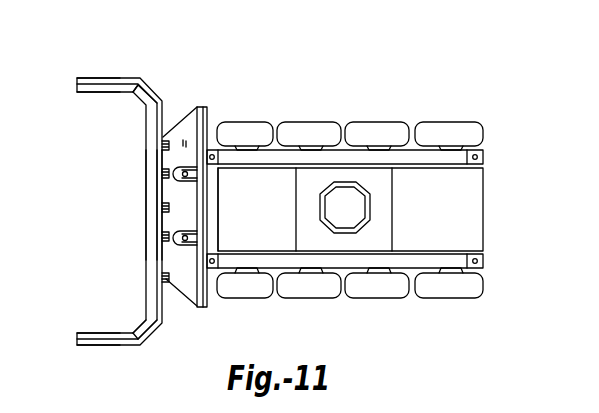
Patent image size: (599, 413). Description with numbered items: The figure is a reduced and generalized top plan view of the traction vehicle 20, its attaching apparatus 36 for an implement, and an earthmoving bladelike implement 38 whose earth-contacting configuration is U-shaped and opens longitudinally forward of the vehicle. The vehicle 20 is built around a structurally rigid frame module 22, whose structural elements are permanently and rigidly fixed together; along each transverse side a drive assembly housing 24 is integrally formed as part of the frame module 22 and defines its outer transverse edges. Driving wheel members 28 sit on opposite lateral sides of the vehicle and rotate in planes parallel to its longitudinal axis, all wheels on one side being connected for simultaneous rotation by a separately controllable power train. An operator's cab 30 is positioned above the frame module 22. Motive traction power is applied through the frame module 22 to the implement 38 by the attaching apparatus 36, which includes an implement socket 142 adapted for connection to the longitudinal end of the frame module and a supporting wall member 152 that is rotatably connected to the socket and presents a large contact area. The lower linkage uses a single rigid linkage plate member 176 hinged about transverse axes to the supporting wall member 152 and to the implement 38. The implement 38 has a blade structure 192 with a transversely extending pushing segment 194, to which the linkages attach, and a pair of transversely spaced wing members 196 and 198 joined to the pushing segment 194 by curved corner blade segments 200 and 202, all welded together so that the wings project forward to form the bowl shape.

The traction vehicle 20 is at (367, 213).
The frame module 22 is at (440, 215).
The drive assembly housing 24 is at (450, 163).
The driving wheel members 28 is at (393, 292).
The operator's cab 30 is at (349, 201).
The attaching apparatus 36 is at (178, 103).
The implement 38 is at (149, 71).
The implement socket 142 is at (228, 221).
The supporting wall member 152 is at (207, 118).
The linkage plate member 176 is at (187, 290).
The blade structure 192 is at (138, 241).
The pushing segment 194 is at (147, 210).
The wing member 196 is at (103, 89).
The wing member 198 is at (87, 336).
The curved corner blade segment 200 is at (139, 101).
The curved corner blade segment 202 is at (143, 324).